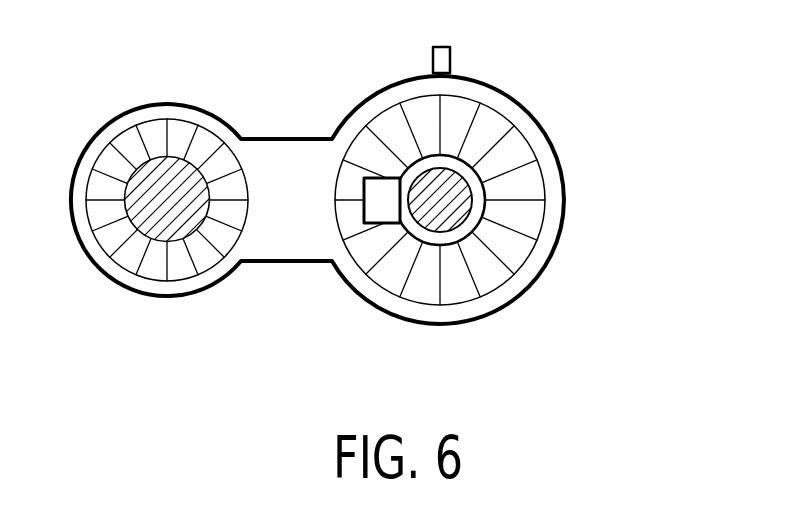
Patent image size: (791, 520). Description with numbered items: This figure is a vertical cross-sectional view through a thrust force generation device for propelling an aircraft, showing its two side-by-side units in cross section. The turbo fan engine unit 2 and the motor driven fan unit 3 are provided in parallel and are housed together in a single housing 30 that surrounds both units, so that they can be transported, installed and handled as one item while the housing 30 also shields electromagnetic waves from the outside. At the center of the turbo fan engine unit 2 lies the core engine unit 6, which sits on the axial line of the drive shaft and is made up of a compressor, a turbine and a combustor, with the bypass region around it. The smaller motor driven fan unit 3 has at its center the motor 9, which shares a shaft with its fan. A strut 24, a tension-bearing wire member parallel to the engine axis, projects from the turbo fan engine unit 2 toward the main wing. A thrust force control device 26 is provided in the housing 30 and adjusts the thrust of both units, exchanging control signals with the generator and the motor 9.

The turbo fan engine unit 2 is at (340, 196).
The motor driven fan unit 3 is at (97, 108).
The core engine unit 6 is at (432, 246).
The motor 9 is at (162, 243).
The strut 24 is at (450, 55).
The thrust force control device 26 is at (363, 190).
The housing 30 is at (370, 93).